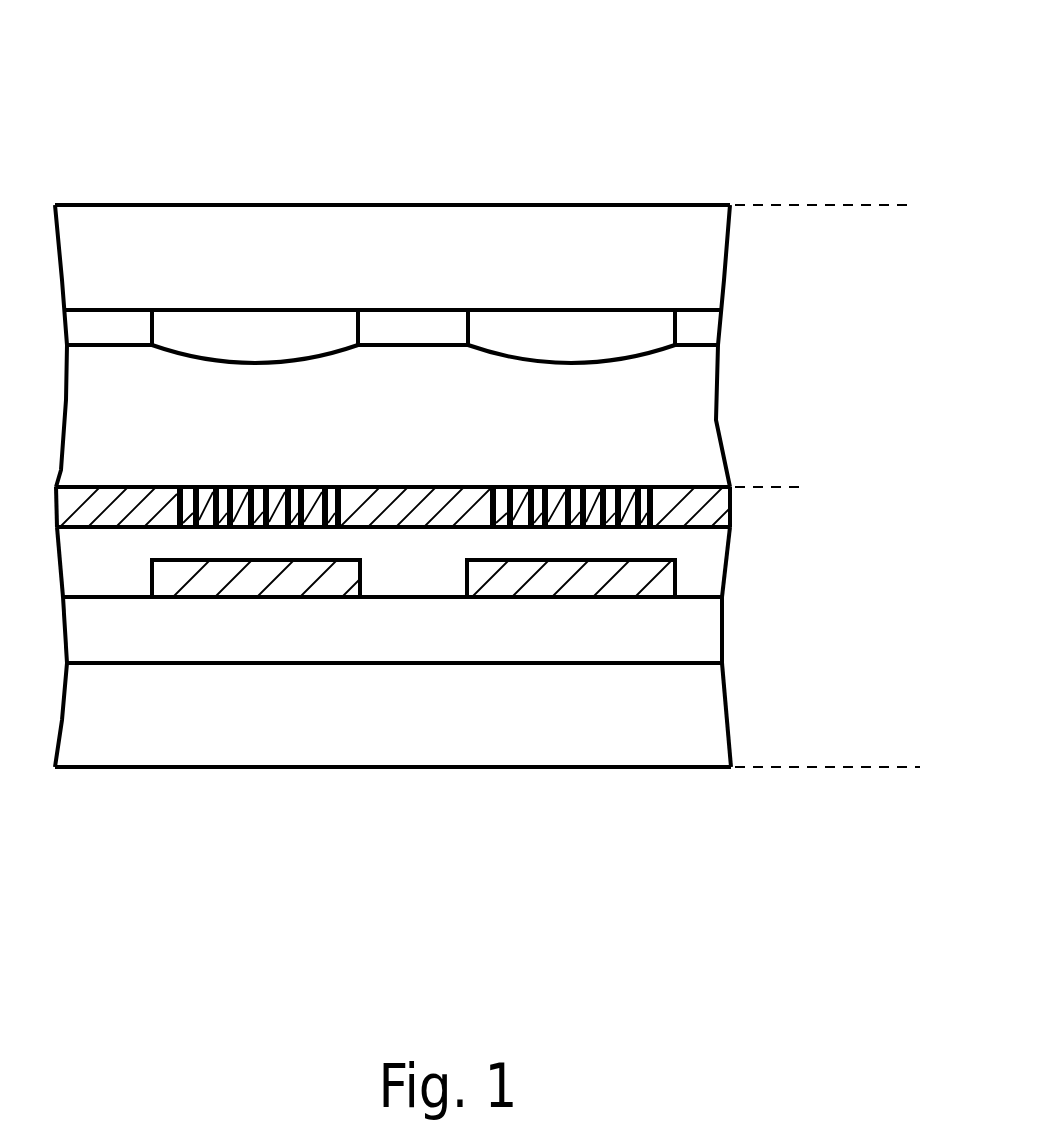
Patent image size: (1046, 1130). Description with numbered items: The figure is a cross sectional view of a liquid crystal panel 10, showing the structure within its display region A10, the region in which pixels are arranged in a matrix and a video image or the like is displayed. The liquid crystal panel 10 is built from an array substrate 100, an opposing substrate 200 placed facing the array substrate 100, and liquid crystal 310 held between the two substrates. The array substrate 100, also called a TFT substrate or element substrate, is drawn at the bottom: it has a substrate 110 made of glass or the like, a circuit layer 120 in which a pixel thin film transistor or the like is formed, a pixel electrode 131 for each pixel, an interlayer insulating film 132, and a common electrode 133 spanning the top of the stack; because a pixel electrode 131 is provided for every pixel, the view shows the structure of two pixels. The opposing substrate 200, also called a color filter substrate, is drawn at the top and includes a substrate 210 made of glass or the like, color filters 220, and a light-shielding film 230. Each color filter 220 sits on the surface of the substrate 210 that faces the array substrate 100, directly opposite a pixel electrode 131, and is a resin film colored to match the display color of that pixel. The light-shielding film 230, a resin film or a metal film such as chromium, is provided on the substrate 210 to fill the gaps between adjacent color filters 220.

The display region A10 is at (728, 88).
The liquid crystal panel 10 is at (891, 767).
The array substrate 100 is at (778, 767).
The substrate 110 is at (98, 748).
The circuit layer 120 is at (185, 642).
The pixel electrode 131 is at (255, 582).
The interlayer insulating film 132 is at (390, 555).
The common electrode 133 is at (423, 508).
The opposing substrate 200 is at (773, 205).
The substrate 210 is at (122, 260).
The color filter 220 is at (255, 333).
The light-shielding film 230 is at (408, 335).
The liquid crystal 310 is at (683, 422).